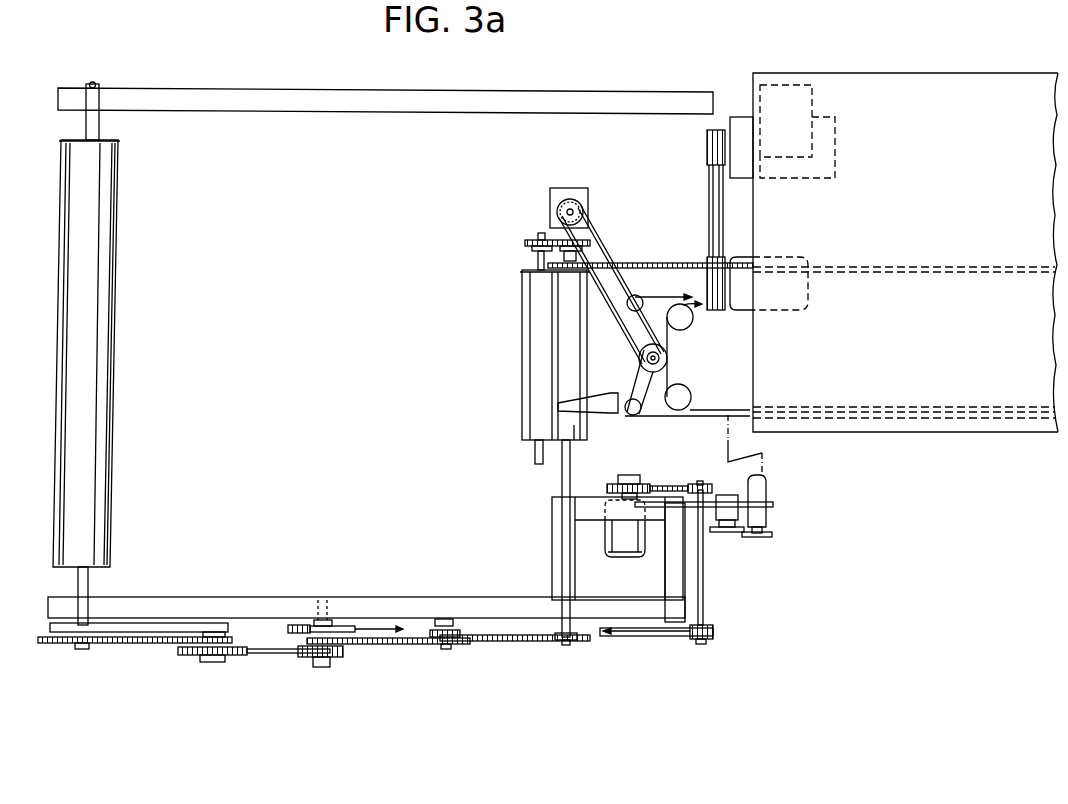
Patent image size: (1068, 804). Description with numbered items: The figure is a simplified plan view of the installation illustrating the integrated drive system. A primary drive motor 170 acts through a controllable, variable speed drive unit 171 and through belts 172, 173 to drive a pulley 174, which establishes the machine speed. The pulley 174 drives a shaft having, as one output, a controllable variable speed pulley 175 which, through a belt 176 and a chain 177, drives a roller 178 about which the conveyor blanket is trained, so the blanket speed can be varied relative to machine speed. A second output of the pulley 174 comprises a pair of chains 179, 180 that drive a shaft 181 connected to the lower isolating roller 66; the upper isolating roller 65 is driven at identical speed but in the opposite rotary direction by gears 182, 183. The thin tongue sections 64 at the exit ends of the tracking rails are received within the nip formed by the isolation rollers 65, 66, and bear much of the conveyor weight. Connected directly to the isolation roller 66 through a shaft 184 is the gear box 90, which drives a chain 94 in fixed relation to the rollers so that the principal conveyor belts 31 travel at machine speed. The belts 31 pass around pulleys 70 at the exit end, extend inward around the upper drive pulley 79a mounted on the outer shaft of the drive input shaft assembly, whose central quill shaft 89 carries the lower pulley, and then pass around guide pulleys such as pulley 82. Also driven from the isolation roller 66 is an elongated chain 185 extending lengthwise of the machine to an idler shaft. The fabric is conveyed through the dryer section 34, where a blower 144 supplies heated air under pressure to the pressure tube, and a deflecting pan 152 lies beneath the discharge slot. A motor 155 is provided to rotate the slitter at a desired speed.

The elongated belts 31 is at (670, 297).
The dryer section 34 is at (984, 436).
The thin tongue sections 64 is at (595, 398).
The upper isolating roller 65 is at (530, 290).
The lower isolating roller 66 is at (578, 427).
The pulleys 70 is at (642, 394).
The upper pulley 79a is at (660, 358).
The guide pulley 82 is at (685, 392).
The central quill shaft 89 is at (660, 350).
The gear box mechanism 90 is at (585, 192).
The chain 94 is at (606, 250).
The blower 144 is at (812, 99).
The deflecting pan 152 is at (765, 490).
The motor 155 is at (740, 510).
The primary drive motor 170 is at (620, 557).
The variable speed drive unit 171 is at (636, 462).
The belt 172 is at (670, 470).
The belt 173 is at (648, 637).
The pulley 174 is at (300, 624).
The variable speed pulley 175 is at (322, 668).
The belt 176 is at (272, 654).
The chain 177 is at (137, 644).
The roller 178 is at (100, 491).
The chain 179 is at (407, 645).
The chain 180 is at (515, 641).
The shaft 181 is at (562, 480).
The gear 182 is at (598, 232).
The gear 183 is at (525, 242).
The shaft 184 is at (556, 222).
The elongated chain 185 is at (646, 264).